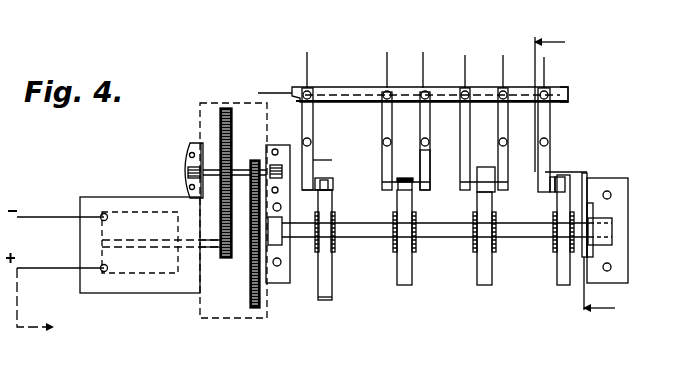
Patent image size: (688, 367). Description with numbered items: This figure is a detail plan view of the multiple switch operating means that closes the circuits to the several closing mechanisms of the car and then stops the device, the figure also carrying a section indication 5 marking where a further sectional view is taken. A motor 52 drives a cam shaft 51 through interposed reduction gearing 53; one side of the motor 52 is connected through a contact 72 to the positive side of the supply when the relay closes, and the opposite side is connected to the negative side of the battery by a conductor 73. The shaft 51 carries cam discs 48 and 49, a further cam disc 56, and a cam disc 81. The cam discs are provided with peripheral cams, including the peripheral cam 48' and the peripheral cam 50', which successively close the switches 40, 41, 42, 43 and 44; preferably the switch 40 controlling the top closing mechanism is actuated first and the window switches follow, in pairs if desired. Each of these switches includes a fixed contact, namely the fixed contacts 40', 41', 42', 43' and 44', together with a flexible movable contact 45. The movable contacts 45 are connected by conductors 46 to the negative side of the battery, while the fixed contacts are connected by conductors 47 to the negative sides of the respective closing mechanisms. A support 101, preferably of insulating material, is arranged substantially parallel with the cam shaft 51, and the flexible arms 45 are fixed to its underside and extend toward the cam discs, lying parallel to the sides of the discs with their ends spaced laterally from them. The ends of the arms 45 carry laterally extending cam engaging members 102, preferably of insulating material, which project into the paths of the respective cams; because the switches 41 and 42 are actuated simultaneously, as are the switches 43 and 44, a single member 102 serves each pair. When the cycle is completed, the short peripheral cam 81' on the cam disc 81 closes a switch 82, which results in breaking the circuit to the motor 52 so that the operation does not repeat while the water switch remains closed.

The section line 5 is at (575, 177).
The switch 40 is at (322, 121).
The fixed contact 40' is at (322, 139).
The switch 41 is at (370, 140).
The fixed contact 41' is at (369, 141).
The switch 42 is at (406, 140).
The fixed contact 42' is at (413, 170).
The switch 43 is at (452, 139).
The fixed contact 43' is at (438, 141).
The switch 44 is at (484, 139).
The fixed contact 44' is at (516, 132).
The movable contact 45 is at (381, 160).
The conductor 46 is at (277, 92).
The conductor 47 is at (422, 62).
The cam disc 48 is at (340, 245).
The peripheral cam 48' is at (334, 310).
The cam disc 49 is at (397, 283).
The peripheral cam 50' is at (504, 182).
The shaft 51 is at (454, 231).
The motor 52 is at (125, 212).
The reduction gearing 53 is at (250, 276).
The cam disk 56 is at (474, 285).
The contact 72 is at (52, 329).
The conductor 73 is at (44, 217).
The cam disc 81 is at (551, 232).
The peripheral cam 81' is at (586, 217).
The switch 82 is at (550, 143).
The support 101 is at (568, 87).
The cam engaging member 102 is at (333, 190).